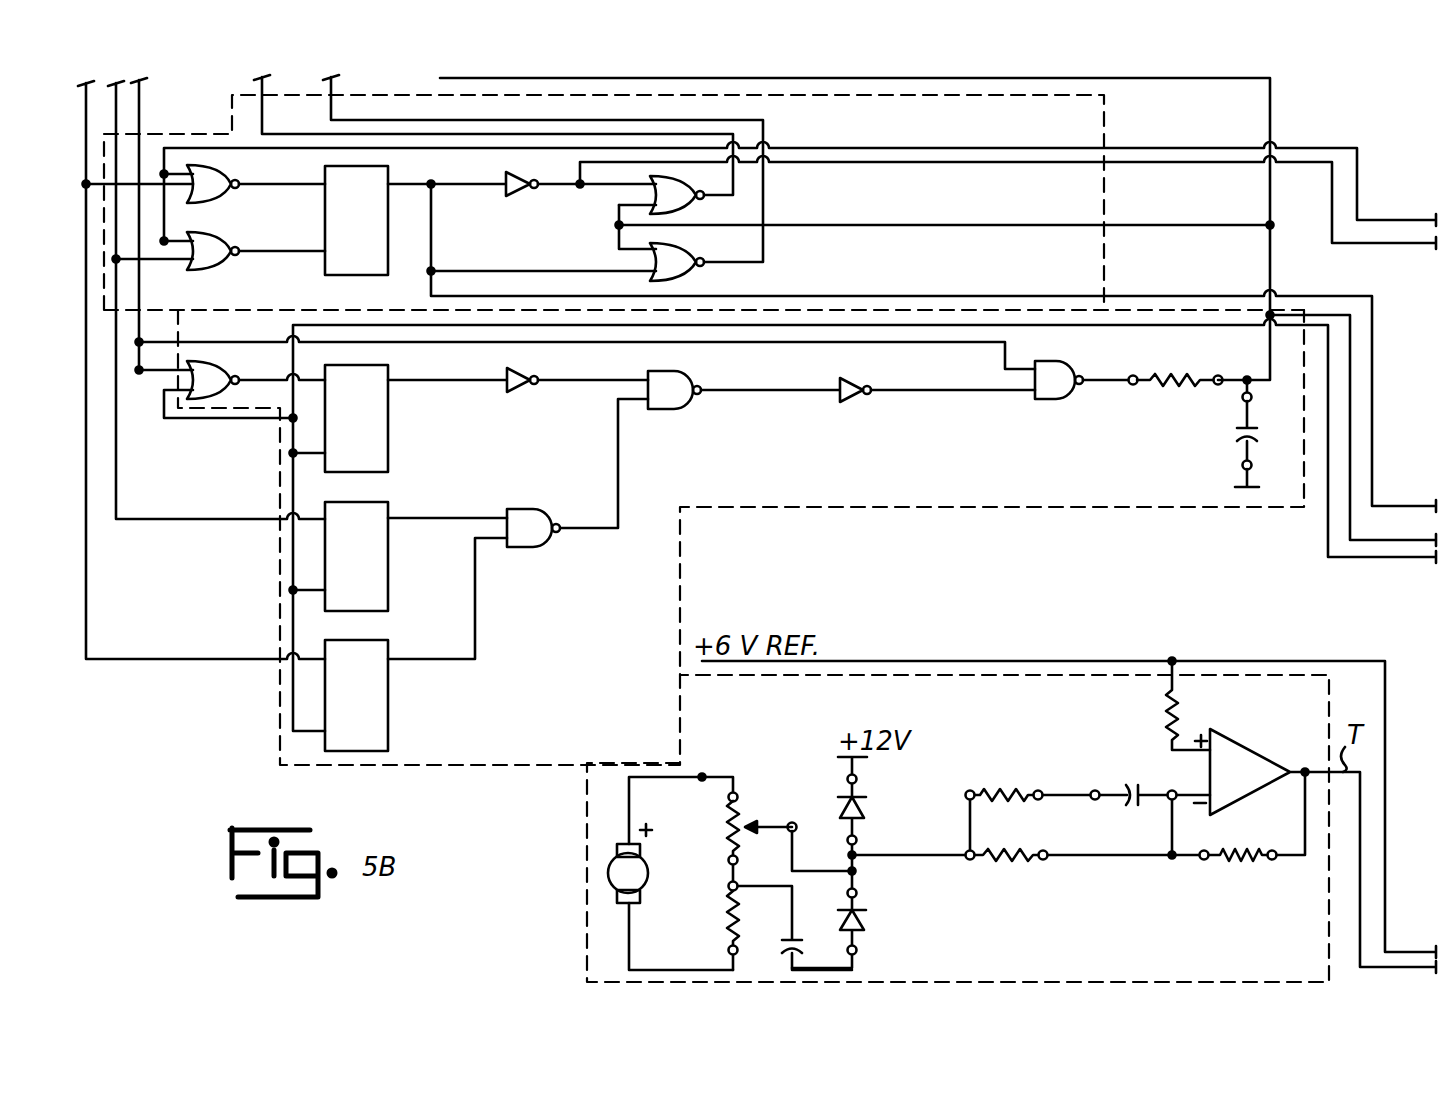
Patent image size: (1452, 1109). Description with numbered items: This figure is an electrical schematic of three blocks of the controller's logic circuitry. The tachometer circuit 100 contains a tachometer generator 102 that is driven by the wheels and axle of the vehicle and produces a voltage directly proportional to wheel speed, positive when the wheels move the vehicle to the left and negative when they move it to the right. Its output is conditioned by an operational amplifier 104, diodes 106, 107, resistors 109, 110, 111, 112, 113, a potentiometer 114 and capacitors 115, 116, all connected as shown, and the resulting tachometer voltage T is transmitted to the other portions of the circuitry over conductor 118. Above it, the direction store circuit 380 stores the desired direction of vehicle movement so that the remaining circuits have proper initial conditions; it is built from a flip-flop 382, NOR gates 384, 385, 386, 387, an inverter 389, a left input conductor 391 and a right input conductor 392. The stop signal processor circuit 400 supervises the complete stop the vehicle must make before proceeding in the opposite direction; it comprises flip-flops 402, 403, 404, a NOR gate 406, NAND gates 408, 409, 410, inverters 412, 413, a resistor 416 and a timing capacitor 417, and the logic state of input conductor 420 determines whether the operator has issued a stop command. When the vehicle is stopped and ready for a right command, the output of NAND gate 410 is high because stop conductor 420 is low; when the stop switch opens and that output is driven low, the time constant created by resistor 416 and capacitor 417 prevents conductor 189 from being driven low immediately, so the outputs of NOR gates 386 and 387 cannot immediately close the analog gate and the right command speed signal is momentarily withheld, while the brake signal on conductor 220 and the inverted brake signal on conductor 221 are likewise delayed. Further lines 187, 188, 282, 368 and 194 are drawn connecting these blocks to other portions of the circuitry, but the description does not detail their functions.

The tachometer circuit 100 is at (1233, 672).
The tachometer generator 102 is at (648, 890).
The operational amplifier 104 is at (1246, 745).
The diode 106 is at (859, 805).
The diode 107 is at (867, 925).
The resistor 109 is at (722, 931).
The resistor 110 is at (1006, 785).
The resistor 111 is at (1042, 848).
The resistor 112 is at (1232, 862).
The resistor 113 is at (1184, 700).
The potentiometer 114 is at (726, 830).
The capacitor 115 is at (797, 935).
The capacitor 116 is at (1146, 784).
The conductor 118 is at (1406, 968).
The signal line 187 is at (262, 110).
The signal line 188 is at (331, 82).
The conductor 189 is at (447, 80).
The reference voltage line 194 is at (1418, 952).
The brake signal conductor 220 is at (296, 487).
The brake-bar signal conductor 221 is at (463, 150).
The signal line 282 is at (596, 162).
The signal line 368 is at (989, 296).
The direction store circuit 380 is at (1104, 205).
The flip-flop 382 is at (366, 276).
The NOR gate 384 is at (222, 170).
The NOR gate 385 is at (224, 236).
The NOR gate 386 is at (689, 207).
The NOR gate 387 is at (696, 278).
The inverter 389 is at (518, 193).
The left input conductor 391 is at (183, 203).
The right input conductor 392 is at (170, 268).
The stop signal processor circuit 400 is at (1304, 443).
The flip-flop 402 is at (388, 421).
The flip-flop 403 is at (379, 502).
The flip-flop 404 is at (388, 700).
The NOR gate 406 is at (222, 366).
The NAND gate 408 is at (515, 508).
The NAND gate 409 is at (663, 409).
The NAND gate 410 is at (1052, 397).
The inverter 412 is at (528, 388).
The inverter 413 is at (846, 402).
The resistor 416 is at (1173, 394).
The timing capacitor 417 is at (1252, 428).
The stop input conductor 420 is at (141, 112).